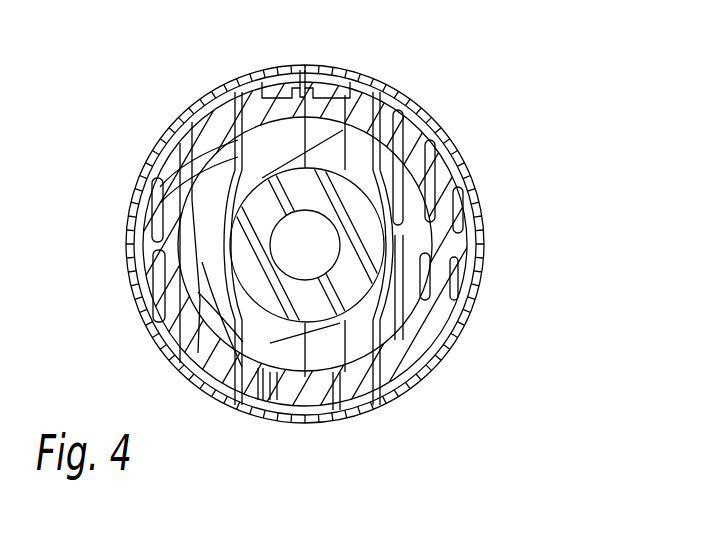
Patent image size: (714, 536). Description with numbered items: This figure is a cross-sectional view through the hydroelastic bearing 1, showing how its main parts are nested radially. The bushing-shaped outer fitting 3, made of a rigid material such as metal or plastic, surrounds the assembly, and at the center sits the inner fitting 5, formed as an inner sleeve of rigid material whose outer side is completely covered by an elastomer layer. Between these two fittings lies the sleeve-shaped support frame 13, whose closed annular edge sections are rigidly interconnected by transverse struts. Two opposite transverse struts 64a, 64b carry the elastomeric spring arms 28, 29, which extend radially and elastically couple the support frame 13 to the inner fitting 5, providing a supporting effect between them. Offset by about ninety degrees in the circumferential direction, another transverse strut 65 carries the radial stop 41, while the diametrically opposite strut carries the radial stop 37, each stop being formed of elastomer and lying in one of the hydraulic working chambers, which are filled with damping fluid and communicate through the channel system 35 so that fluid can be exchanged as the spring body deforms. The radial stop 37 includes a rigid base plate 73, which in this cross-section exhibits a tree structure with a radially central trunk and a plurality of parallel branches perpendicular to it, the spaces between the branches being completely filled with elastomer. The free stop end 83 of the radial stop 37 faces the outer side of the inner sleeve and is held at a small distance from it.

The hydroelastic bearing 1 is at (202, 96).
The outer fitting 3 is at (165, 138).
The inner fitting 5 is at (365, 210).
The support frame 13 is at (278, 400).
The spring arm 28 is at (338, 150).
The spring arm 29 is at (293, 363).
The channel system 35 is at (330, 75).
The radial stop 37 is at (393, 258).
The radial stop 41 is at (160, 272).
The transverse strut 64a is at (302, 62).
The transverse strut 64b is at (333, 395).
The transverse strut 65 is at (185, 232).
The base plate 73 is at (462, 246).
The free stop end 83 is at (390, 233).